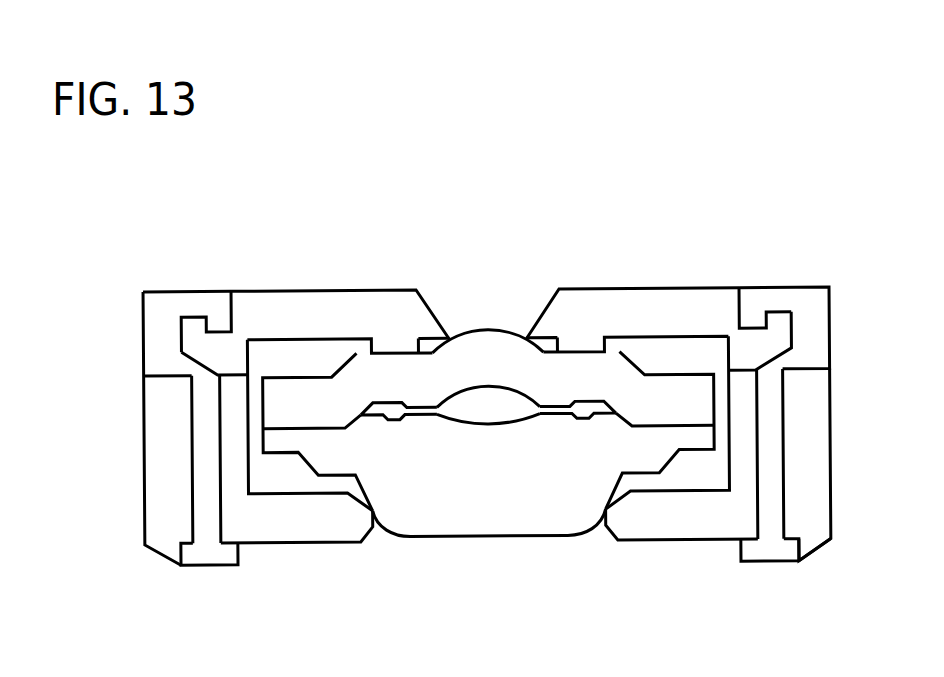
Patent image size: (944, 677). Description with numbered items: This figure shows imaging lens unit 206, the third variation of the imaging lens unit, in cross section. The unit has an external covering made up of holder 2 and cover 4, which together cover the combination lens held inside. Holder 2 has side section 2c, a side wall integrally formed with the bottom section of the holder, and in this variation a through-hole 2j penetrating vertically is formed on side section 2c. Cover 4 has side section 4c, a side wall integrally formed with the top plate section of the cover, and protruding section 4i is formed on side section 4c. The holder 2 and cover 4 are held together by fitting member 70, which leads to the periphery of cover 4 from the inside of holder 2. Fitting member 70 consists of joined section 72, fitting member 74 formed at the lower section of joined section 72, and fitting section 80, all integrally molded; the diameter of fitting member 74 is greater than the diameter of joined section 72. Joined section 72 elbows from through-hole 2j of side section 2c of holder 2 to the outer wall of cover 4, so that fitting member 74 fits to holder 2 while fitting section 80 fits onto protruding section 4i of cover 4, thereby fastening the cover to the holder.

The imaging lens unit 206 is at (692, 226).
The fitting member 70 is at (64, 289).
The fitting section 80 is at (217, 311).
The joined section 72 is at (200, 450).
The fitting member 74 is at (198, 552).
The cover 4 is at (841, 285).
The protruding section 4i is at (778, 324).
The side section 4c is at (780, 354).
The holder 2 is at (841, 370).
The through-hole 2j is at (783, 455).
The side section 2c is at (818, 455).